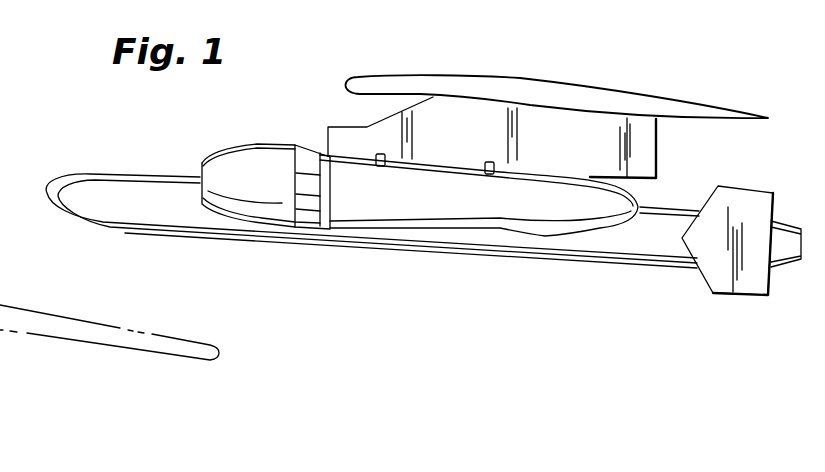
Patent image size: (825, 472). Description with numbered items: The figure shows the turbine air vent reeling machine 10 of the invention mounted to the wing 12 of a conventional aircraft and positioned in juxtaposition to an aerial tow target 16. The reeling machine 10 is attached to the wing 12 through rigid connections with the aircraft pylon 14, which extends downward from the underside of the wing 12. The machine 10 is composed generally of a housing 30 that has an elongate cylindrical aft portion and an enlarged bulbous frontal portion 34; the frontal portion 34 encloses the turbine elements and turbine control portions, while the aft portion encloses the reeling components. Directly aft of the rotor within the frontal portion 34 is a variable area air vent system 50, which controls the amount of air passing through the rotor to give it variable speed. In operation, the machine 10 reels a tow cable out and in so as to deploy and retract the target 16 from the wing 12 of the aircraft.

The turbine air vent reeling machine 10 is at (266, 131).
The wing 12 is at (648, 98).
The aircraft pylon 14 is at (646, 137).
The aerial tow target 16 is at (587, 249).
The housing 30 is at (446, 228).
The frontal portion 34 is at (226, 210).
The variable area air vent system 50 is at (306, 214).